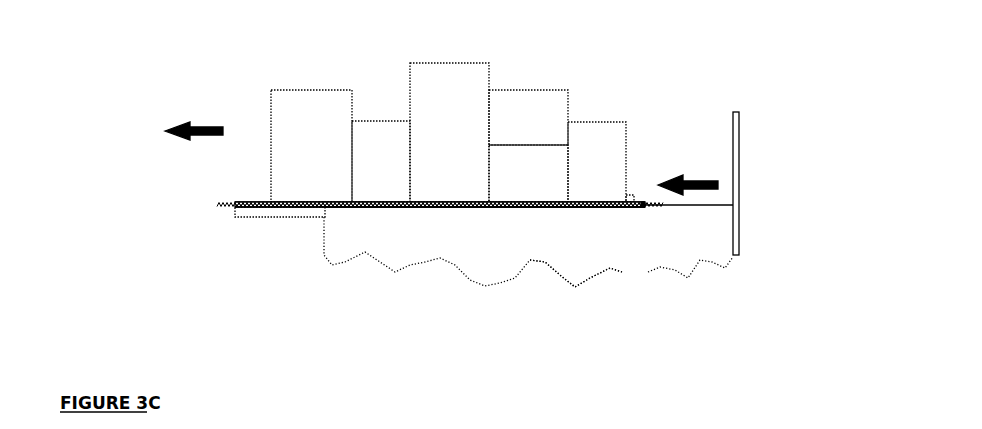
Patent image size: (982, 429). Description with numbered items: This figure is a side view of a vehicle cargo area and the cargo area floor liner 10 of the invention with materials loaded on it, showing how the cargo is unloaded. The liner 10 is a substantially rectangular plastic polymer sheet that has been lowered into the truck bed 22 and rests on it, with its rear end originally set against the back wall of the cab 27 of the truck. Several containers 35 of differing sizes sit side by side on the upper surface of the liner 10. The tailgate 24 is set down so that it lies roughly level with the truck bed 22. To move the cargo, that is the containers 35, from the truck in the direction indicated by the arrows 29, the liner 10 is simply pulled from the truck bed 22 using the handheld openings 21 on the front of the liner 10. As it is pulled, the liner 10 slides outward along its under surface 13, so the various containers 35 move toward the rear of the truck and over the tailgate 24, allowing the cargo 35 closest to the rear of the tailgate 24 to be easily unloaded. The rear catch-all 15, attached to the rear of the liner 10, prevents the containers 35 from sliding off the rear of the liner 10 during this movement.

The cargo area floor liner 10 is at (455, 209).
The under surface 13 is at (553, 210).
The catch-all 15 is at (643, 205).
The handheld openings 21 is at (242, 202).
The truck bed 22 is at (388, 207).
The tailgate 24 is at (235, 217).
The cab 27 is at (741, 162).
The arrows 29 is at (177, 128).
The containers 35 is at (452, 132).